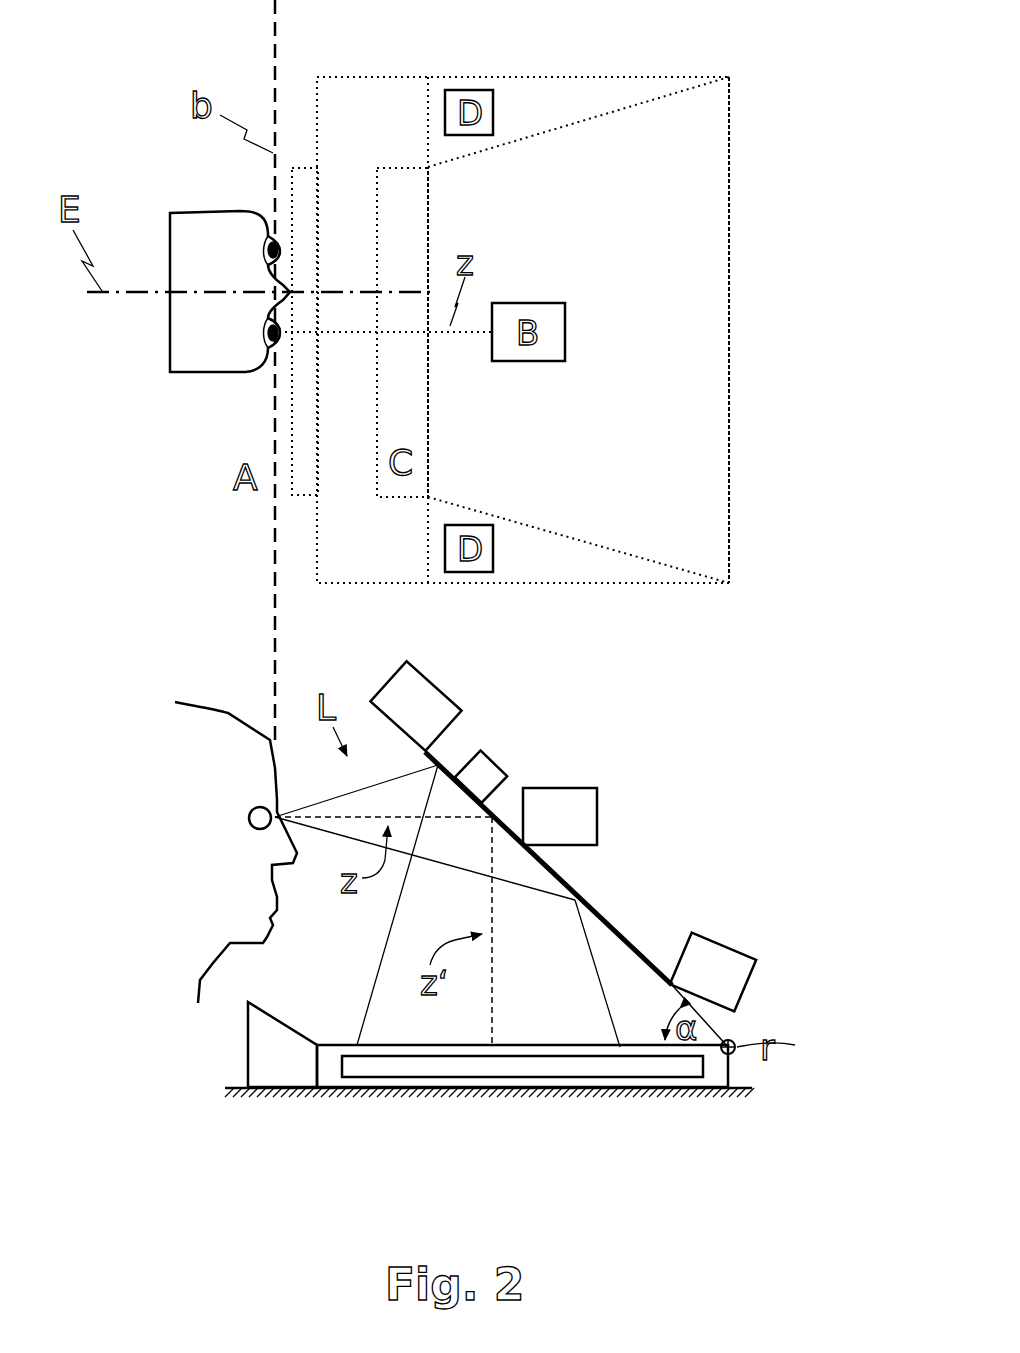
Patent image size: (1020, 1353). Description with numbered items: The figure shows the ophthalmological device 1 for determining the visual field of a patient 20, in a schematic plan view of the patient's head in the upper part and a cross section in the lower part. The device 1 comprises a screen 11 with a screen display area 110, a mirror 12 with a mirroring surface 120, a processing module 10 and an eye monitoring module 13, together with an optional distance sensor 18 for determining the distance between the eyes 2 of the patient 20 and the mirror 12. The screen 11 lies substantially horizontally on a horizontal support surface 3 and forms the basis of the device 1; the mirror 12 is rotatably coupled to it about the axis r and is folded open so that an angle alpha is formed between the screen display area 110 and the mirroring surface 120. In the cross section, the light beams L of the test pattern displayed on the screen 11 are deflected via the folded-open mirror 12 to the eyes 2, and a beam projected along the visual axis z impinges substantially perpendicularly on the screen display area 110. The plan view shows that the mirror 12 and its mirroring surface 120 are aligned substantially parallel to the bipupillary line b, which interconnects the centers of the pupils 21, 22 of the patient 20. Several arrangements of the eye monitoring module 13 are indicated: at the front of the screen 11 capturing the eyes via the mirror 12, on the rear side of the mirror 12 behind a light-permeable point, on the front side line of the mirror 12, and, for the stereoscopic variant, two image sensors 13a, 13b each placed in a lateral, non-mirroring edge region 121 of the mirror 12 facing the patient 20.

The ophthalmological device 1 is at (750, 140).
The eye 2 is at (258, 808).
The horizontal support surface 3 is at (243, 1090).
The processing module 10 is at (658, 1068).
The screen 11 is at (364, 70).
The mirror 12 is at (660, 570).
The eye monitoring module 13 is at (546, 313).
The image sensor 13a is at (482, 565).
The image sensor 13b is at (480, 96).
The distance sensor 18 is at (488, 765).
The patient 20 is at (152, 342).
The pupil 21 is at (280, 251).
The pupil 22 is at (283, 325).
The screen display area 110 is at (394, 90).
The mirroring surface 120 is at (652, 113).
The edge region 121 is at (572, 95).